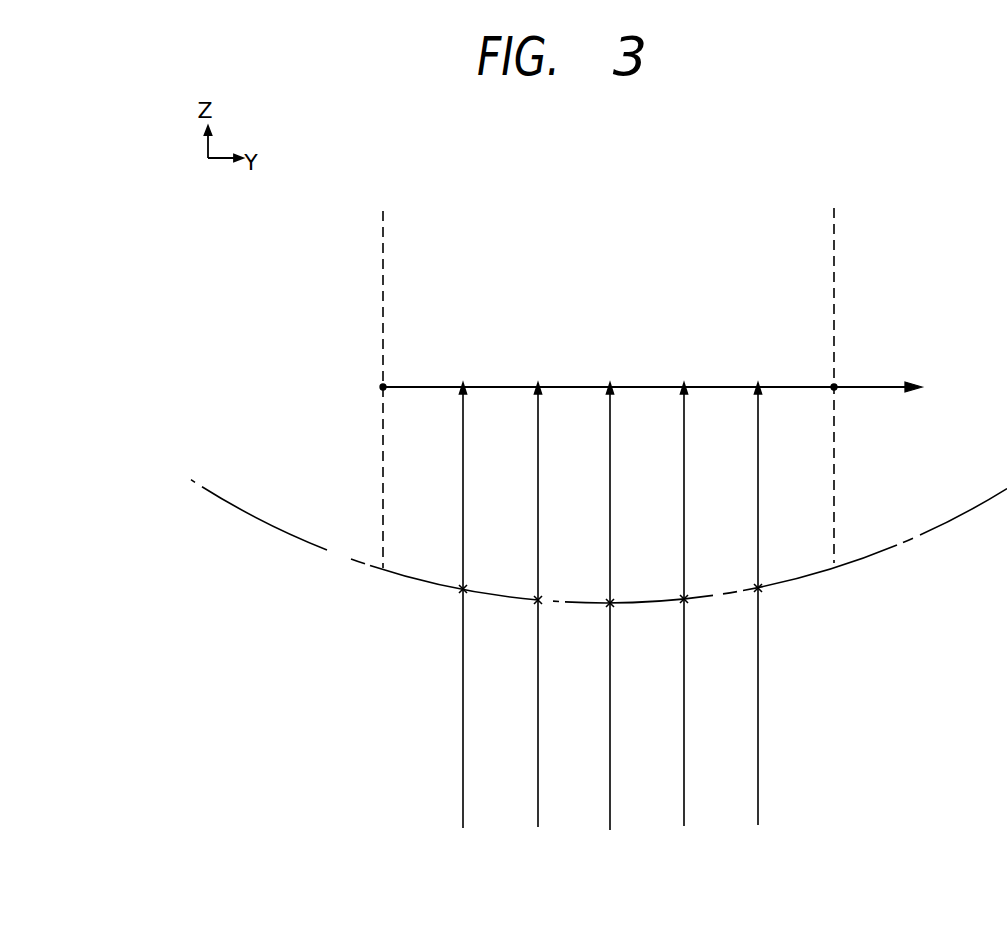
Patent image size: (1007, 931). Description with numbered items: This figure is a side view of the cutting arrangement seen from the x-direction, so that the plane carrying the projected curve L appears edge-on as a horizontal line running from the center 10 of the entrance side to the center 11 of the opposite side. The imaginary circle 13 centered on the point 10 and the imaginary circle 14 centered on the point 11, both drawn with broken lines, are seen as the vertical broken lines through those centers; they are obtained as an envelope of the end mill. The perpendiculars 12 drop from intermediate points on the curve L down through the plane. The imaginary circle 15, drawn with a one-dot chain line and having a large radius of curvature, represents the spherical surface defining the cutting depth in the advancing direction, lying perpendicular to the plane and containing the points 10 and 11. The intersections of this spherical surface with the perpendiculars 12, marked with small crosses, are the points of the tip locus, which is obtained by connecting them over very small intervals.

The center of the side on the end mill entrance side 10 is at (384, 387).
The center of the opposite side 11 is at (836, 386).
The perpendiculars 12 is at (463, 778).
The imaginary circle 13 is at (379, 374).
The imaginary circle 14 is at (830, 372).
The imaginary circle 15 is at (327, 552).
The curve L is at (583, 387).